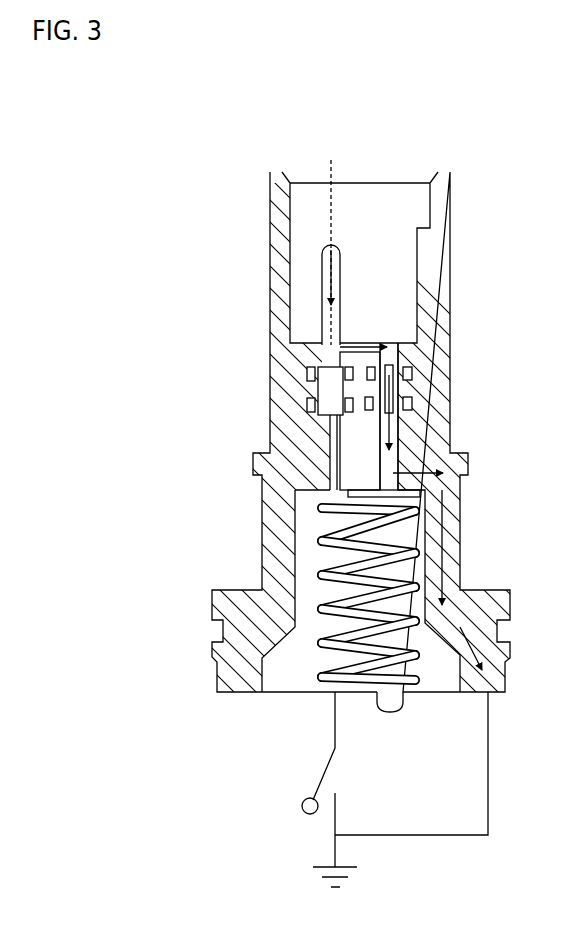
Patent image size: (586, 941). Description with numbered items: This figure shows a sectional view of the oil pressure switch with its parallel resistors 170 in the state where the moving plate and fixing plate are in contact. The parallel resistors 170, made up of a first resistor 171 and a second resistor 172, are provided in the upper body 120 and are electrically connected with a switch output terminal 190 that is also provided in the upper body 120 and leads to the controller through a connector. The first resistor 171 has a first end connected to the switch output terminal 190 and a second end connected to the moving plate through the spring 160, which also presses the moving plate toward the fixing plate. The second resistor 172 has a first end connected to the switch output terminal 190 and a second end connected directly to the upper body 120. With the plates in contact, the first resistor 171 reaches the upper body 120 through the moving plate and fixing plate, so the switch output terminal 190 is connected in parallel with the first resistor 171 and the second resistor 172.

The upper body 120 is at (242, 632).
The spring 160 is at (410, 550).
The parallel resistors 170 is at (130, 777).
The first resistor 171 is at (328, 390).
The second resistor 172 is at (392, 395).
The switch output terminal 190 is at (325, 262).